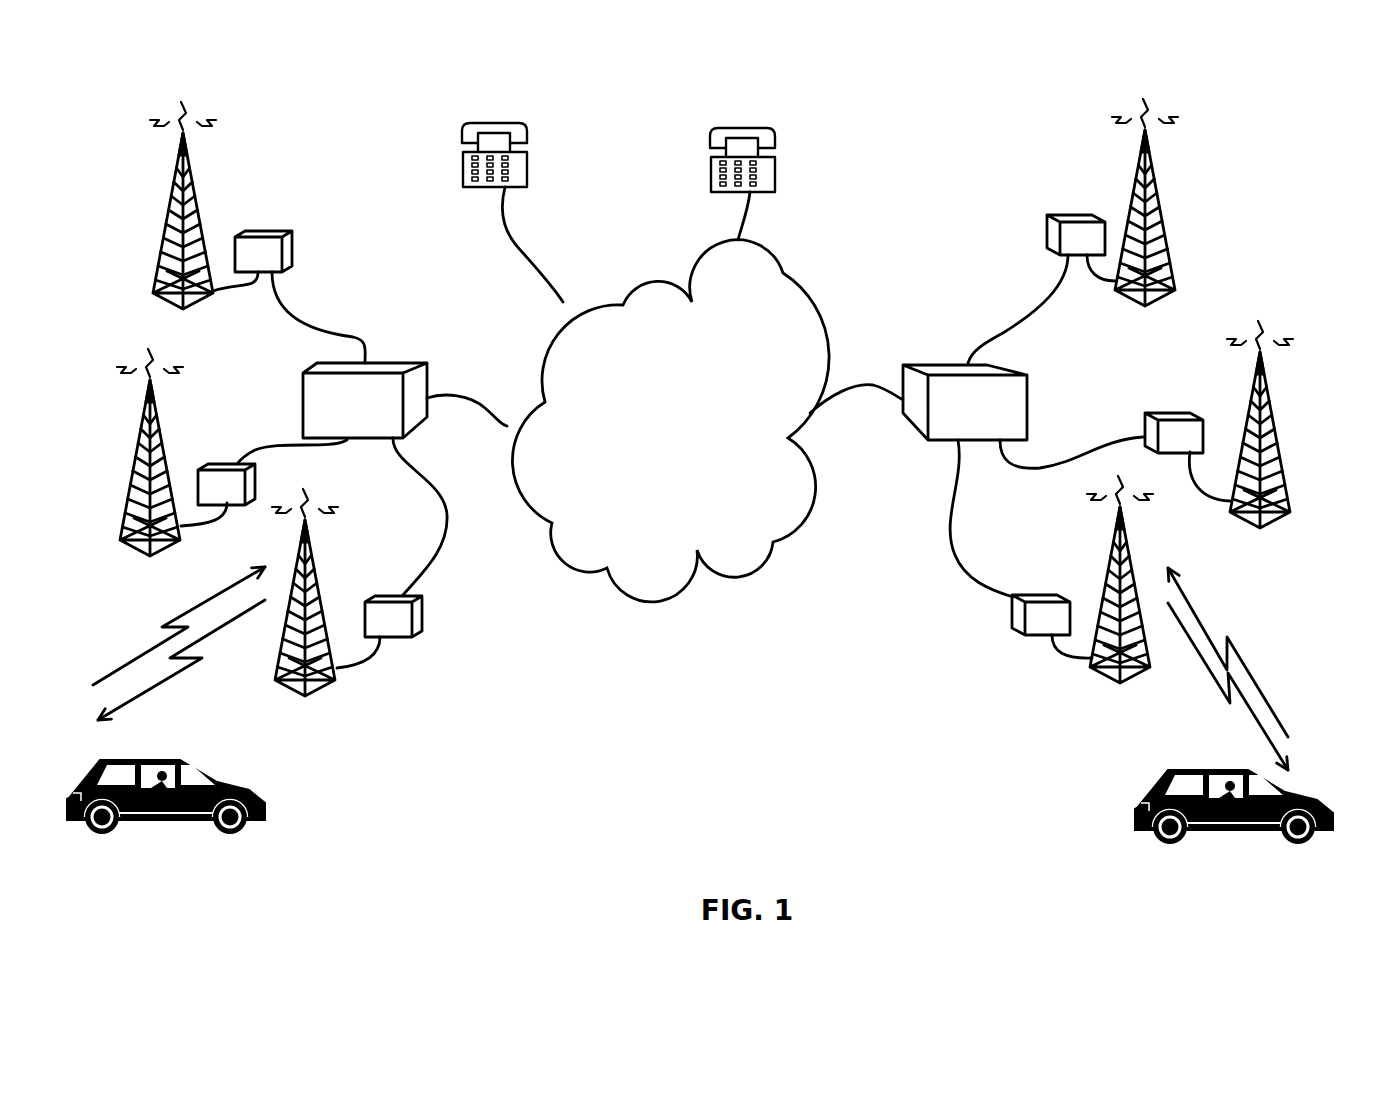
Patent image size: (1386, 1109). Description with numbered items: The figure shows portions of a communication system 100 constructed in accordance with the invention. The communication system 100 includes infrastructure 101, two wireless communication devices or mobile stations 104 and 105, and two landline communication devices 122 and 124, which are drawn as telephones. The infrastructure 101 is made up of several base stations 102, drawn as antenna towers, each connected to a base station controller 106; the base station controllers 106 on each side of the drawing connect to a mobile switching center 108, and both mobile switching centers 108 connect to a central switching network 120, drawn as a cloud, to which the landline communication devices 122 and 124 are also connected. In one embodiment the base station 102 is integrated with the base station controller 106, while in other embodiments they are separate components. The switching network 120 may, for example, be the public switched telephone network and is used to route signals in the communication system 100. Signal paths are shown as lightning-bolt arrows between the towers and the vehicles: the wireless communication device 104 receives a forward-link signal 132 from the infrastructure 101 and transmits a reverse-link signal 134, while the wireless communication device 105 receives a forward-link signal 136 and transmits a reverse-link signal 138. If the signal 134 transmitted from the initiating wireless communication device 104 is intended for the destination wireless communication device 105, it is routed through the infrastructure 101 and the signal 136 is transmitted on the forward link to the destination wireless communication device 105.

The communication system 100 is at (1280, 105).
The infrastructure 101 is at (738, 692).
The base station 102 is at (165, 223).
The wireless communication device 104 is at (263, 813).
The wireless communication device 105 is at (1310, 842).
The base station controller 106 is at (292, 247).
The mobile switching center 108 is at (390, 362).
The switching network 120 is at (792, 282).
The landline communication device 122 is at (765, 130).
The landline communication device 124 is at (512, 123).
The forward link signal 132 is at (202, 642).
The reverse link signal 134 is at (220, 592).
The forward link signal 136 is at (1255, 722).
The reverse link signal 138 is at (1245, 665).